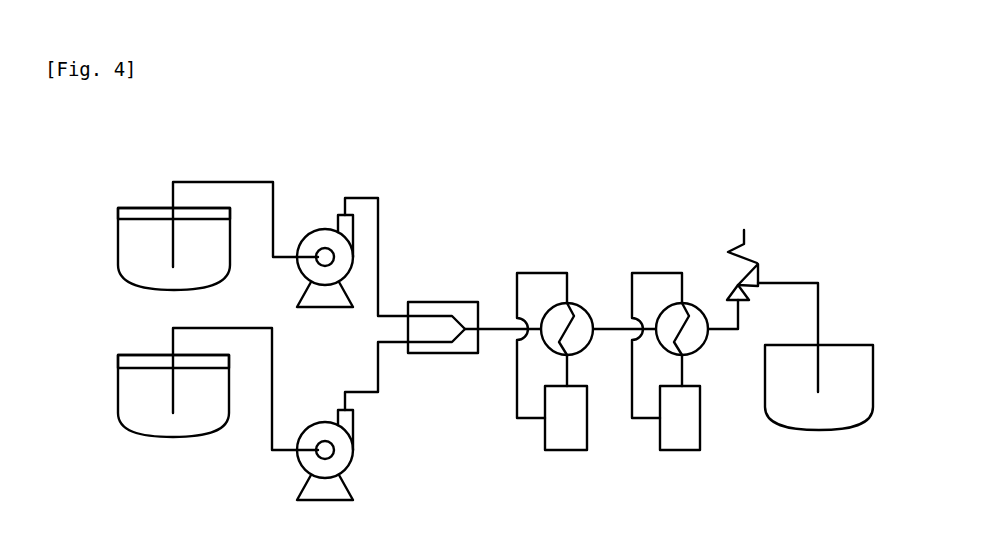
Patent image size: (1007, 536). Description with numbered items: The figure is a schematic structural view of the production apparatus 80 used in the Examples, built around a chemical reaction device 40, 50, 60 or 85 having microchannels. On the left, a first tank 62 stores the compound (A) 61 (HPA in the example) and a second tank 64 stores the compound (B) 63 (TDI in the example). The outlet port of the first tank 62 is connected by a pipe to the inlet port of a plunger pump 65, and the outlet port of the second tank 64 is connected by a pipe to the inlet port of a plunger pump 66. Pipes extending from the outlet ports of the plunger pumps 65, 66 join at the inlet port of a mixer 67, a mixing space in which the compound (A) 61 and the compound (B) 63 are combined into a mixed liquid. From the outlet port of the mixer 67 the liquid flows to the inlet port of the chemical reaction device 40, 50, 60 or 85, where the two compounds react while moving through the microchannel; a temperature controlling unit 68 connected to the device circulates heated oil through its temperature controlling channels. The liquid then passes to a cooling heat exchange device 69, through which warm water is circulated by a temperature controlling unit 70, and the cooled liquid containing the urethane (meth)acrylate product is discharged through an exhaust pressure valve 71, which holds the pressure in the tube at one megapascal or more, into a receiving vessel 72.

The chemical reaction device 40 is at (569, 303).
The chemical reaction device 50 is at (567, 329).
The chemical reaction device 60 is at (567, 329).
The chemical reaction device 85 is at (567, 329).
The compound (A) 61 is at (138, 271).
The first tank 62 is at (149, 208).
The compound (B) 63 is at (145, 421).
The second tank 64 is at (141, 355).
The plunger pump 65 is at (321, 231).
The plunger pump 66 is at (321, 427).
The mixer 67 is at (427, 301).
The temperature controlling unit 68 is at (562, 449).
The cooling heat exchange device 69 is at (676, 305).
The temperature controlling unit 70 is at (680, 449).
The exhaust pressure valve 71 is at (759, 267).
The receiving vessel 72 is at (819, 416).
The flow reaction system 80 is at (471, 170).